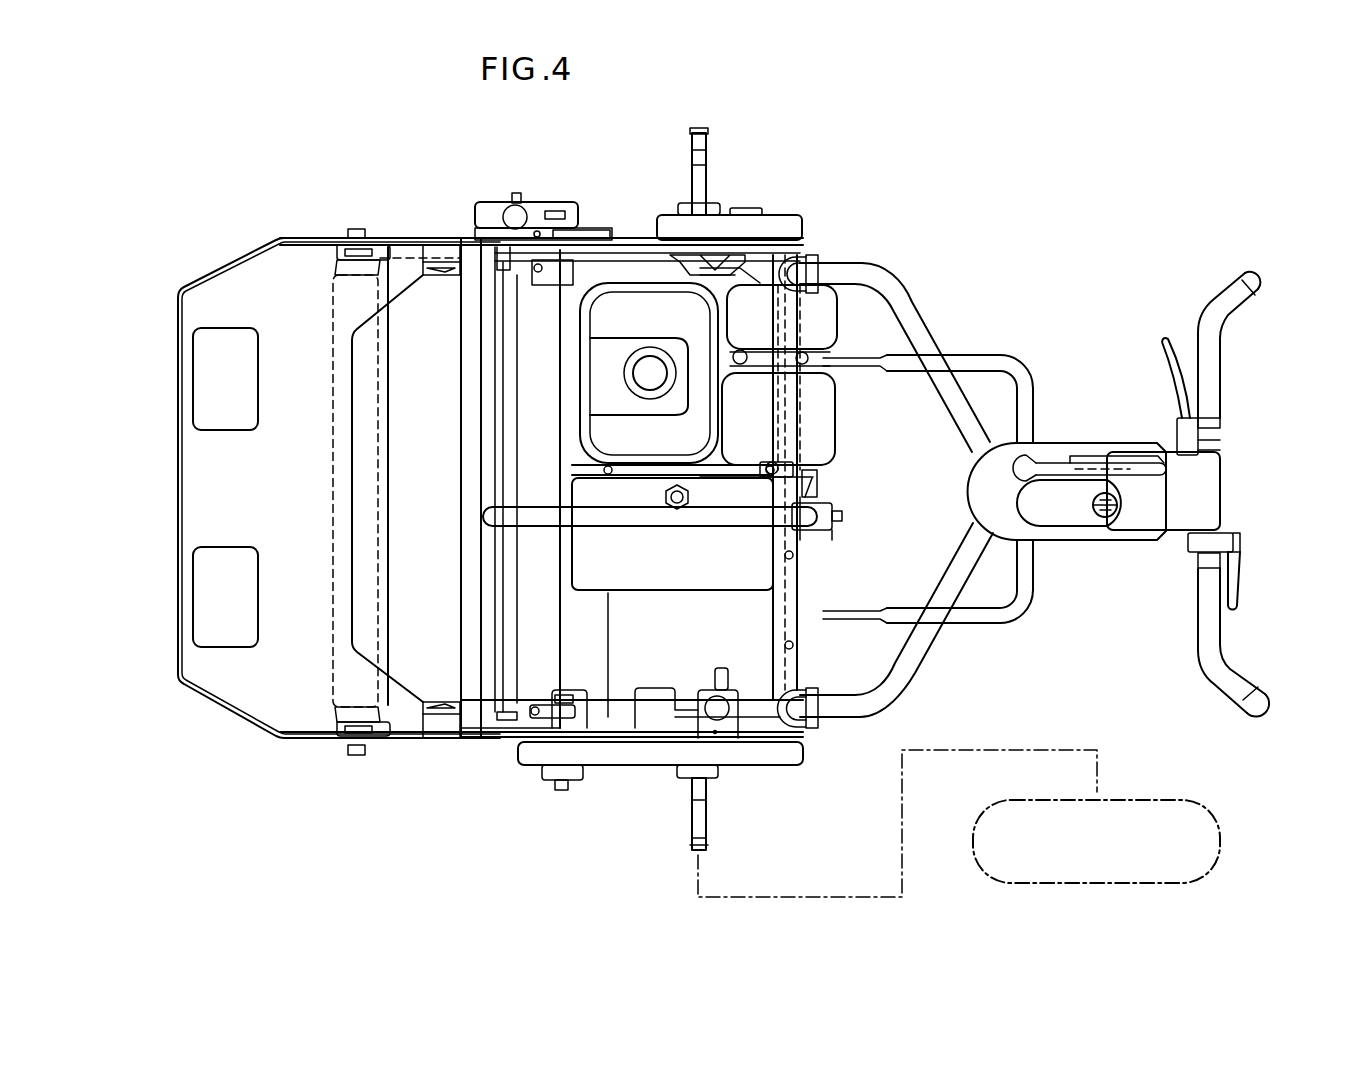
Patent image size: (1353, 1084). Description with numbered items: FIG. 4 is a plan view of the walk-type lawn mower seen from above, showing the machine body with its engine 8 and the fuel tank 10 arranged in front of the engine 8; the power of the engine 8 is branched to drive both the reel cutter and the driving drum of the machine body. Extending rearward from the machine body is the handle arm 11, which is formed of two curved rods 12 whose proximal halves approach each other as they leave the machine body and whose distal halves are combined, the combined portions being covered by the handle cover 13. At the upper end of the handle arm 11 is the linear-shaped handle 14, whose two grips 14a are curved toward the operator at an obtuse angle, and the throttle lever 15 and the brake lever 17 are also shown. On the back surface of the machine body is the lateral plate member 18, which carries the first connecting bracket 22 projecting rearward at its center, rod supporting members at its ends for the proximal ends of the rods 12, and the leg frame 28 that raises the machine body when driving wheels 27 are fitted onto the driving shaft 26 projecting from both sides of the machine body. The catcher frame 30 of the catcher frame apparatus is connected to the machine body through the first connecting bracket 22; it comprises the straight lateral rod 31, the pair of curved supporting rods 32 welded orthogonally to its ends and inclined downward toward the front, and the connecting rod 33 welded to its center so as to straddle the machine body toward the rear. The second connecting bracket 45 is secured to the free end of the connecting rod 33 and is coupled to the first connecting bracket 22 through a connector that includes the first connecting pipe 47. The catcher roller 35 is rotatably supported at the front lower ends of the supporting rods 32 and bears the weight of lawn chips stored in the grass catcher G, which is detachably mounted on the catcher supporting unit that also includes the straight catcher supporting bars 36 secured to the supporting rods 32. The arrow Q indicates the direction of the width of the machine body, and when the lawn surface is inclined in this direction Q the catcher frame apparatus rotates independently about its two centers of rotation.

The engine 8 is at (818, 420).
The fuel tank 10 is at (628, 313).
The handle arm 11 is at (978, 582).
The curved rods 12 is at (920, 318).
The handle cover 13 is at (1112, 522).
The linear-shaped handle 14 is at (1200, 578).
The grips 14a is at (1232, 290).
The throttle lever 15 is at (1237, 600).
The brake lever 17 is at (1173, 370).
The lateral plate member 18 is at (800, 660).
The first connecting bracket 22 is at (823, 473).
The driving shaft 26 is at (704, 155).
The driving wheels 27 is at (1172, 885).
The leg frame 28 is at (963, 625).
The catcher frame 30 is at (528, 535).
The lateral rod 31 is at (465, 560).
The supporting rods 32 is at (435, 245).
The connecting rod 33 is at (605, 520).
The catcher roller 35 is at (333, 314).
The catcher supporting bars 36 is at (345, 252).
The second connecting bracket 45 is at (823, 538).
The first connecting pipe 47 is at (823, 490).
The grass catcher G is at (250, 705).
The direction of the width of the machine body Q is at (1035, 178).